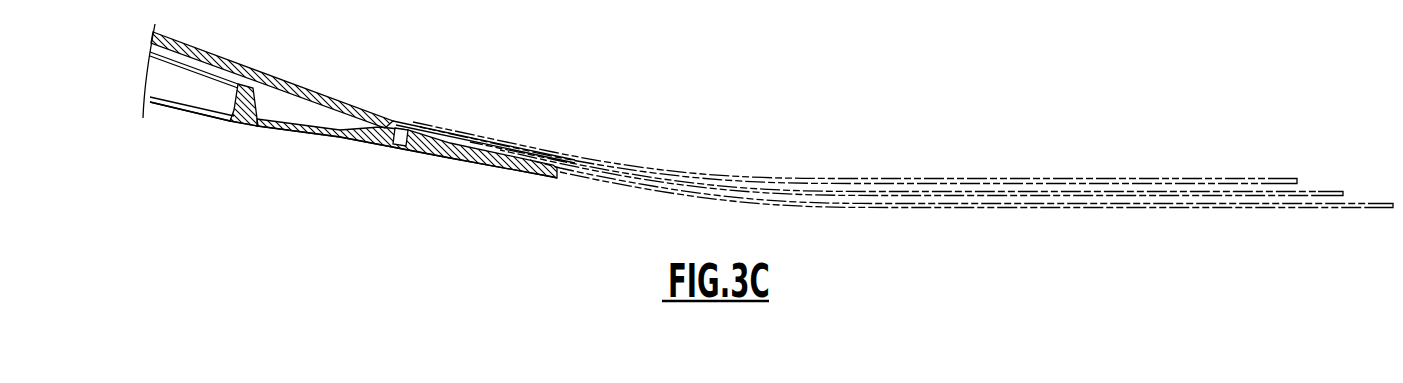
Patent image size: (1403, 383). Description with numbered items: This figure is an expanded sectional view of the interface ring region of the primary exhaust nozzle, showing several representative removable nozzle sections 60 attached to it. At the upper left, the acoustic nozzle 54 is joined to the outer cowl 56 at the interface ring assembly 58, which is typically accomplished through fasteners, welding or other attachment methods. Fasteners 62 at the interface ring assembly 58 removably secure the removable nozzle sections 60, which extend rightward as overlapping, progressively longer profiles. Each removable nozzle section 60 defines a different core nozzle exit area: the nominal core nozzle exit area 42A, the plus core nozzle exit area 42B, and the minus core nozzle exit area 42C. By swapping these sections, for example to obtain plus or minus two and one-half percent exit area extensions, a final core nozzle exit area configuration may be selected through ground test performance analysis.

The nominal core nozzle exit area 42A is at (1325, 193).
The +core nozzle exit area 42B is at (1263, 182).
The −core nozzle exit area 42C is at (1380, 207).
The acoustic nozzle 54 is at (200, 110).
The outer cowl 56 is at (238, 64).
The interface ring assembly 58 is at (362, 184).
The removable nozzle section 60 is at (903, 186).
The fasteners 62 is at (405, 127).